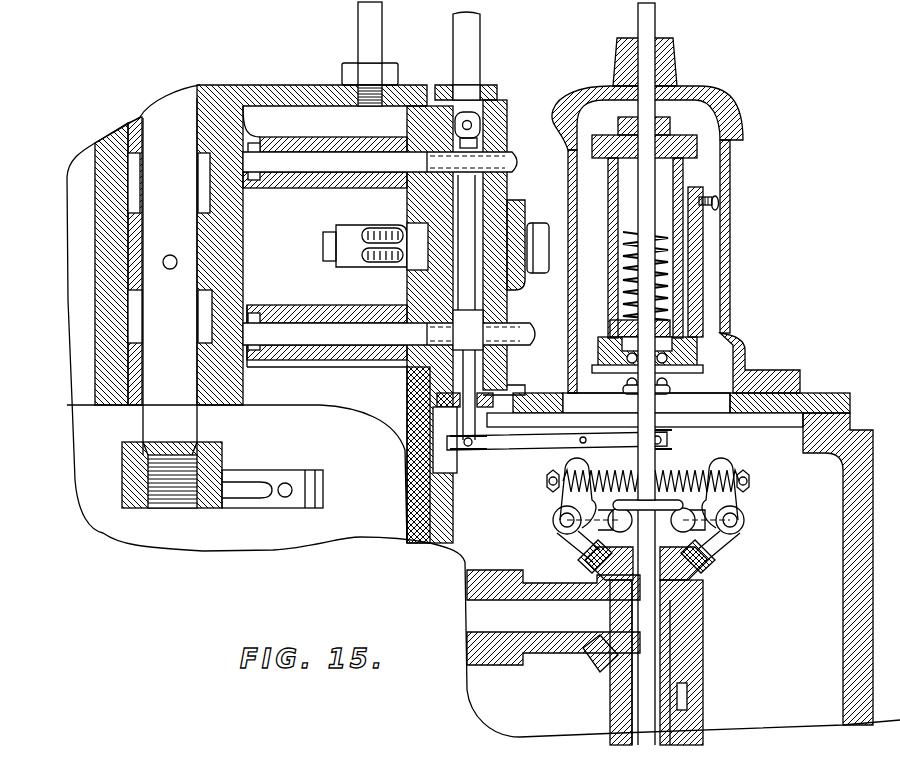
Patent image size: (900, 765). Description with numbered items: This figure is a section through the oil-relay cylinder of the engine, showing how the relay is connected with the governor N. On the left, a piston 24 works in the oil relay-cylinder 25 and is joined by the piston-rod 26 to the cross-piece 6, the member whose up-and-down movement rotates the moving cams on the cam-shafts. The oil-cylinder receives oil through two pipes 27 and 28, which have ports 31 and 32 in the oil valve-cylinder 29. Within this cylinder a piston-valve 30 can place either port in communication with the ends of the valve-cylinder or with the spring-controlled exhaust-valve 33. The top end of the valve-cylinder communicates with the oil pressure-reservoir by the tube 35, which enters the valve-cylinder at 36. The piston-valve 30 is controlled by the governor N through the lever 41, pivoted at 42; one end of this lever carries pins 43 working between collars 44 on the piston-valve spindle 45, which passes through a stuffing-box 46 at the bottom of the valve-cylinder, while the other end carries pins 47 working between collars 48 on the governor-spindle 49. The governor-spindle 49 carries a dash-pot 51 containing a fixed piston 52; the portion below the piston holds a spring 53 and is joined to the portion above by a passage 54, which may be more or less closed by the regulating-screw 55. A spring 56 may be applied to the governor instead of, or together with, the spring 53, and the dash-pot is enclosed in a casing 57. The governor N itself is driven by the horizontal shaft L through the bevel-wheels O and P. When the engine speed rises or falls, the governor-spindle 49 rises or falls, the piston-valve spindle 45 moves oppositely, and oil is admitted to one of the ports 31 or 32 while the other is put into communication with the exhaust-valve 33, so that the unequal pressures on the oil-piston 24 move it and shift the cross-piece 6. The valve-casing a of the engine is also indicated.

The valve-casing a is at (258, 97).
The piston 24 is at (125, 238).
The oil relay-cylinder 25 is at (130, 302).
The piston-rod 26 is at (153, 420).
The oil pipe 27 is at (276, 141).
The oil pipe 28 is at (340, 360).
The spring-controlled exhaust-valve 33 is at (345, 228).
The cross-piece 6 is at (210, 462).
The tube 35 is at (468, 35).
The oil valve-cylinder 29 is at (505, 97).
The tube entry 36 is at (478, 132).
The piston-valve 30 is at (478, 161).
The port 31 is at (435, 162).
The port 32 is at (436, 334).
The stuffing-box 46 is at (507, 390).
The piston-valve spindle 45 is at (467, 410).
The collars 44 is at (433, 430).
The pins 43 is at (470, 446).
The lever 41 is at (550, 447).
The pivot 42 is at (583, 437).
The pins 47 is at (662, 440).
The collars 48 is at (657, 436).
The governor-spindle 49 is at (657, 393).
The spring 56 is at (700, 470).
The dash-pot 51 is at (612, 310).
The fixed piston 52 is at (625, 232).
The spring 53 is at (632, 252).
The passage 54 is at (692, 230).
The regulating-screw 55 is at (707, 198).
The casing 57 is at (725, 92).
The governor N is at (722, 498).
The bevel-wheel P is at (695, 560).
The horizontal shaft L is at (493, 625).
The bevel-wheel O is at (552, 647).